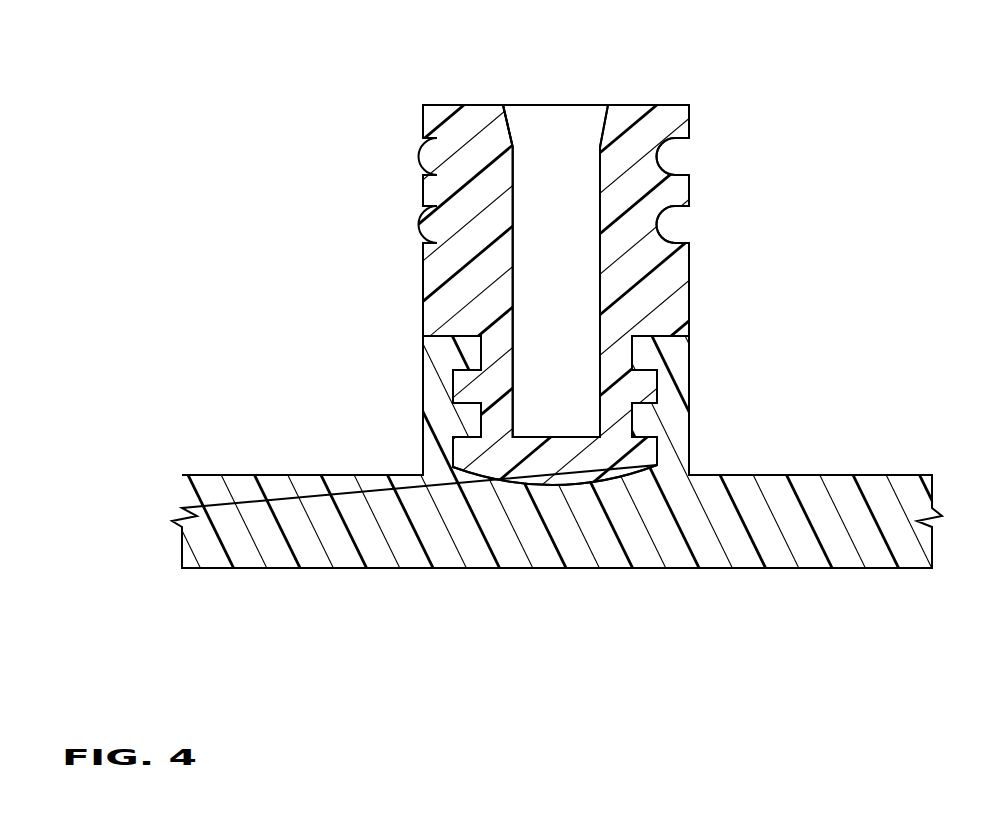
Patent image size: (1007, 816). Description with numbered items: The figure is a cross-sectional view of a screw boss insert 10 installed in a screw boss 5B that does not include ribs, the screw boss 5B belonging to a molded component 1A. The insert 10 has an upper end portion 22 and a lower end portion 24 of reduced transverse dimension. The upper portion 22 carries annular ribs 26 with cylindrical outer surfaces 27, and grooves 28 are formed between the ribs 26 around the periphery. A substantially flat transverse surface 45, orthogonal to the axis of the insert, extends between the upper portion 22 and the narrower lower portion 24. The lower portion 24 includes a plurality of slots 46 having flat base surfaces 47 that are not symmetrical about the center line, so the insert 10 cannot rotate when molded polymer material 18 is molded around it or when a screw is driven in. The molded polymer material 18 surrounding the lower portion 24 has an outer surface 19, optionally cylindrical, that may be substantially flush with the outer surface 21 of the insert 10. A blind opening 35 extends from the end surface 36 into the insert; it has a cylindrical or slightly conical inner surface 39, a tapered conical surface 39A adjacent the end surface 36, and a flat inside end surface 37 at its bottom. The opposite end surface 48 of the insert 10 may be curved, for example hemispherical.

The plate 1A is at (877, 473).
The screw boss insert 10 is at (690, 280).
The outer surface 21 is at (689, 312).
The upper end portion 22 is at (423, 272).
The lower end portion 24 is at (448, 400).
The ribs 26 is at (678, 120).
The outer surfaces 27 is at (690, 130).
The grooves 28 is at (668, 157).
The opening 35 is at (563, 137).
The end surface 36 is at (655, 105).
The flat inside end surface 37 is at (563, 430).
The inner surface 39 is at (598, 230).
The tapered surface 39A is at (512, 147).
The transverse surface 45 is at (455, 350).
The slots 46 is at (643, 364).
The flat base surfaces 47 is at (689, 341).
The outer surface 19 is at (689, 350).
The molded polymer material 18 is at (643, 412).
The screw boss 5B is at (697, 420).
The end surface 48 is at (558, 488).